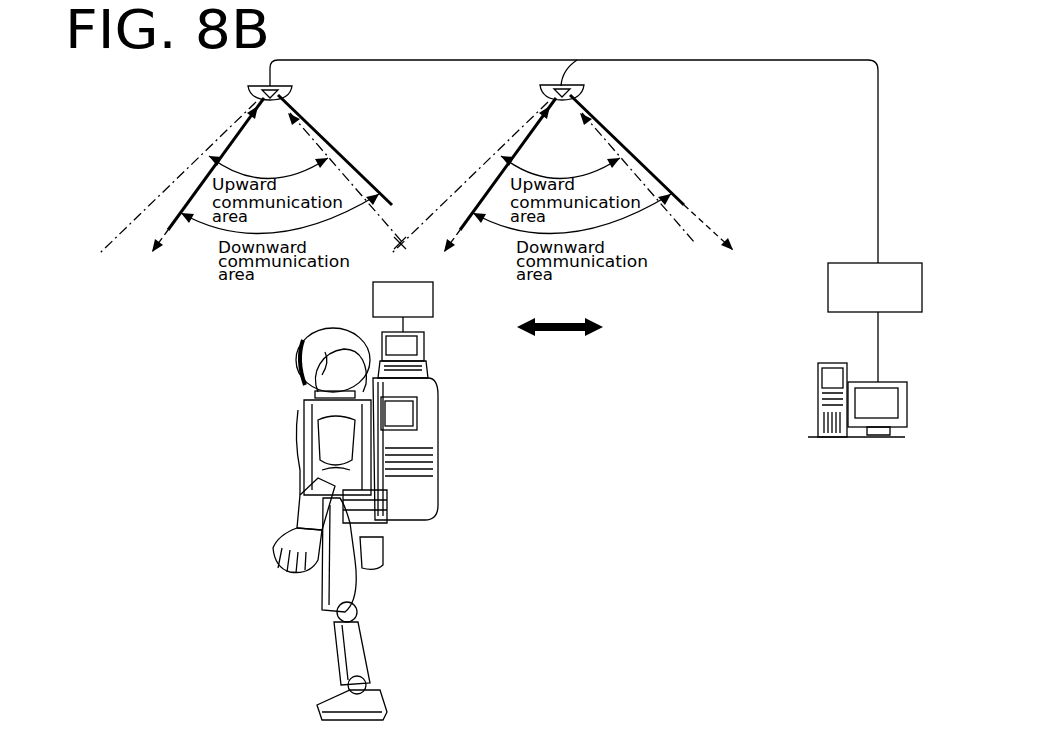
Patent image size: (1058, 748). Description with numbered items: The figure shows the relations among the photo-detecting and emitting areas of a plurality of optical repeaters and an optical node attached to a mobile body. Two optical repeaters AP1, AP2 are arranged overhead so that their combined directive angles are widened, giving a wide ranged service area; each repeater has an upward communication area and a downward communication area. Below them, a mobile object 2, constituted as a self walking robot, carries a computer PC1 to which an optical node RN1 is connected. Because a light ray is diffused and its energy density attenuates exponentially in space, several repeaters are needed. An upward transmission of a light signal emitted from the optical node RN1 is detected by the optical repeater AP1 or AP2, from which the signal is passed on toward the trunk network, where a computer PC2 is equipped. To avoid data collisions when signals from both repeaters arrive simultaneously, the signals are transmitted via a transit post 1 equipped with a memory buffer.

The optical repeater AP1 is at (291, 91).
The optical repeater AP2 is at (582, 91).
The optical node RN1 is at (433, 292).
The computer PC1 is at (424, 340).
The computer PC2 is at (818, 382).
The transit post 1 is at (906, 265).
The mobile object 2 is at (296, 417).